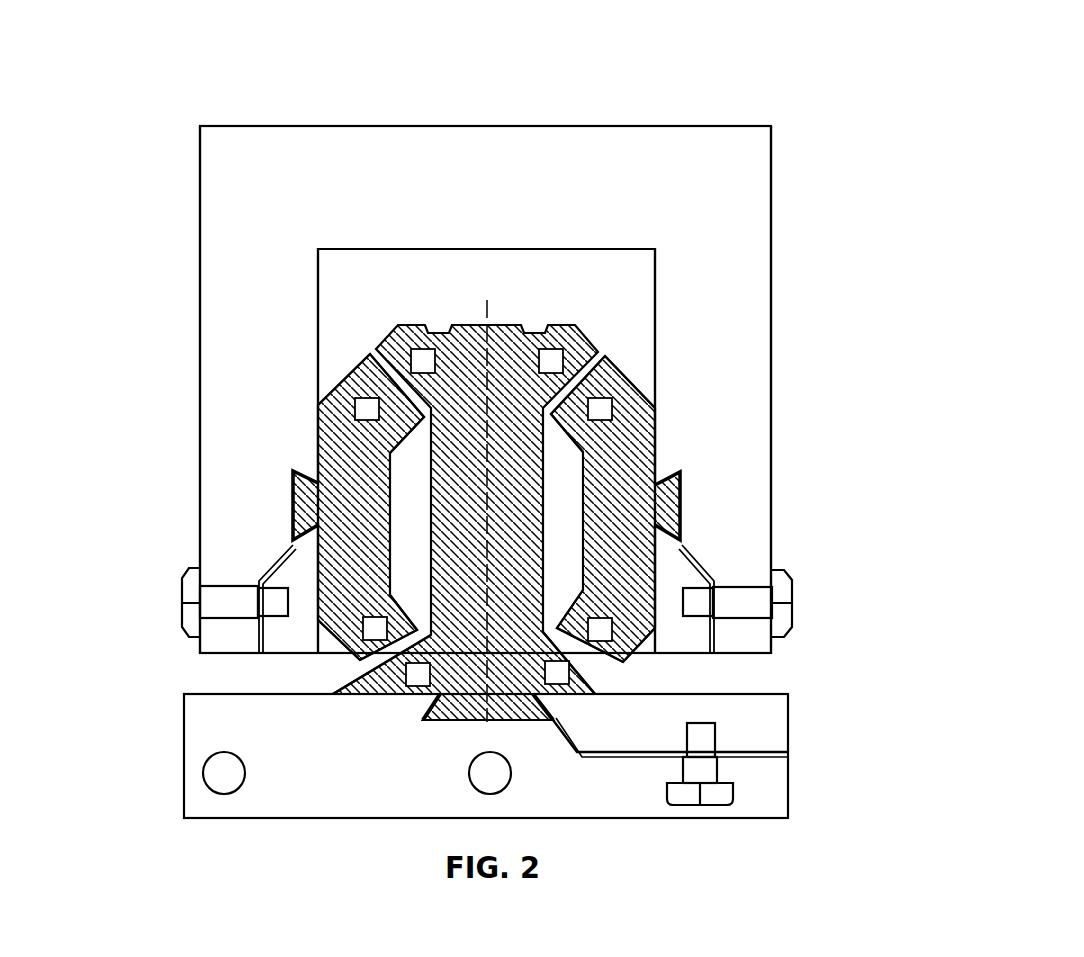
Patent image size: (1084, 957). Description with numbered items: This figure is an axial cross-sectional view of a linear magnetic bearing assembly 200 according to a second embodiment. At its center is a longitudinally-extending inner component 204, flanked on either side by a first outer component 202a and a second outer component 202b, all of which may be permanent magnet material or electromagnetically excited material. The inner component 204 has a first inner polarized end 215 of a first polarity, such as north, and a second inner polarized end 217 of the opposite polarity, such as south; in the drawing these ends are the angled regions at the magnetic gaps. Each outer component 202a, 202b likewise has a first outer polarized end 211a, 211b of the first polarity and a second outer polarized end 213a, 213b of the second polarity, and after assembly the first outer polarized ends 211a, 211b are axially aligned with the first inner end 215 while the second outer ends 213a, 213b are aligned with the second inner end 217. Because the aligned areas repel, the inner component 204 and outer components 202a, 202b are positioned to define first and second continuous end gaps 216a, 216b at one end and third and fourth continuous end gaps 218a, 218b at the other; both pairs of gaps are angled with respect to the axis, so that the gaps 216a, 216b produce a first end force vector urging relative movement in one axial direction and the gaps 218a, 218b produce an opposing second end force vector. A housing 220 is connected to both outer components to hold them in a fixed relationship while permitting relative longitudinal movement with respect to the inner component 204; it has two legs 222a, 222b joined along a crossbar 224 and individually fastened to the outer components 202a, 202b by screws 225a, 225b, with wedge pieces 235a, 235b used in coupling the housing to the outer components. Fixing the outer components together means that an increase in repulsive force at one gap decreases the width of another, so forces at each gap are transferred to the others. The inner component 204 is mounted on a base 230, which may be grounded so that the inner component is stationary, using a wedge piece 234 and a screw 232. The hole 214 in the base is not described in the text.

The linear magnetic bearing assembly 200 is at (838, 62).
The inner component 204 is at (487, 325).
The first outer polarized end 211a is at (365, 394).
The first outer polarized end 211b is at (628, 382).
The second outer polarized end 213a is at (335, 668).
The second outer polarized end 213b is at (620, 645).
The mounting hole 214 is at (506, 762).
The first inner polarized end 215 is at (427, 340).
The first continuous end gap 216a is at (385, 352).
The second continuous end gap 216b is at (598, 353).
The second inner polarized end 217 is at (420, 692).
The third continuous end gap 218a is at (370, 667).
The fourth continuous end gap 218b is at (585, 682).
The housing 220 is at (478, 110).
The leg 222a is at (228, 207).
The leg 222b is at (752, 322).
The crossbar 224 is at (632, 163).
The screw 225a is at (182, 600).
The screw 225b is at (790, 588).
The base 230 is at (590, 806).
The screw 232 is at (720, 797).
The wedge piece 234 is at (768, 722).
The wedge piece 235a is at (280, 578).
The wedge piece 235b is at (692, 575).
The first outer component 202a is at (340, 437).
The second outer component 202b is at (638, 440).